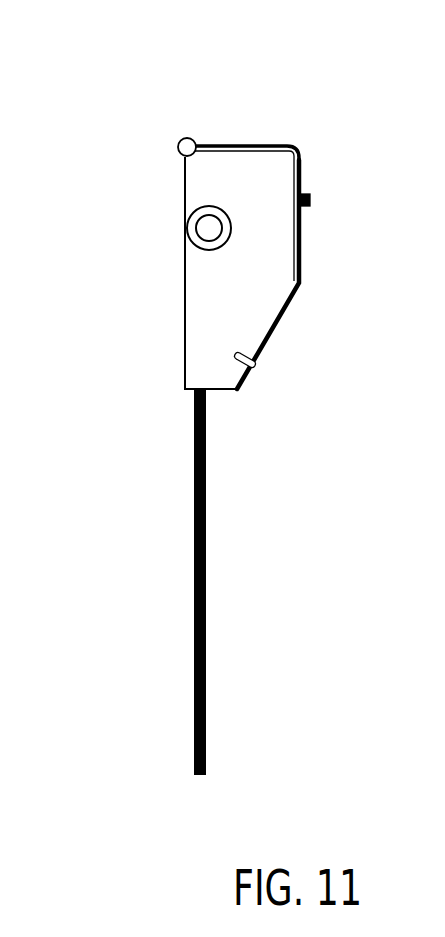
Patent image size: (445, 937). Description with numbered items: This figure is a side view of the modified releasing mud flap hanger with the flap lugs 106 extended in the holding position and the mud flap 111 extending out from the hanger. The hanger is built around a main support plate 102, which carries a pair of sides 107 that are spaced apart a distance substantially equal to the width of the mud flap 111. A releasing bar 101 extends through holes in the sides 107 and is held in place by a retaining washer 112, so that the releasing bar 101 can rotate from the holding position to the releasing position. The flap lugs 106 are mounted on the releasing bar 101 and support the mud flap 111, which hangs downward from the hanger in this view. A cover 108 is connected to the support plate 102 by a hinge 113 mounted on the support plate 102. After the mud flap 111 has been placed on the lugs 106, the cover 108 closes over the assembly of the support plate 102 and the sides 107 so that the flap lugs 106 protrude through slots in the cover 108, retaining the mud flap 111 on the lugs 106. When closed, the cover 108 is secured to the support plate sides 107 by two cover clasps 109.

The releasing bar 101 is at (191, 216).
The main support plate 102 is at (200, 177).
The flap lugs 106 is at (310, 201).
The sides 107 is at (183, 317).
The cover 108 is at (282, 143).
The cover clasps 109 is at (257, 365).
The mud flap 111 is at (195, 515).
The retaining washer 112 is at (220, 212).
The hinge 113 is at (178, 141).